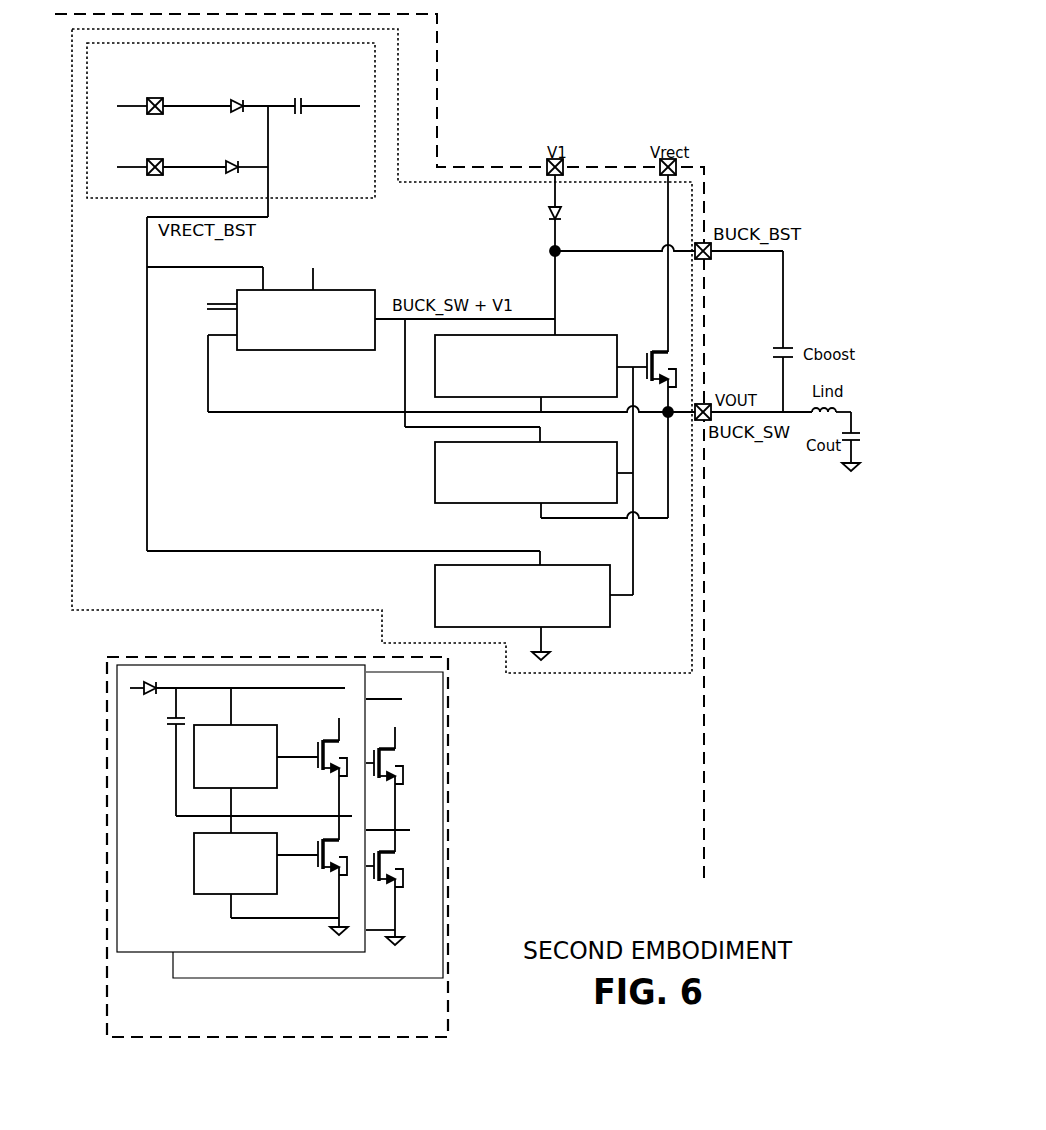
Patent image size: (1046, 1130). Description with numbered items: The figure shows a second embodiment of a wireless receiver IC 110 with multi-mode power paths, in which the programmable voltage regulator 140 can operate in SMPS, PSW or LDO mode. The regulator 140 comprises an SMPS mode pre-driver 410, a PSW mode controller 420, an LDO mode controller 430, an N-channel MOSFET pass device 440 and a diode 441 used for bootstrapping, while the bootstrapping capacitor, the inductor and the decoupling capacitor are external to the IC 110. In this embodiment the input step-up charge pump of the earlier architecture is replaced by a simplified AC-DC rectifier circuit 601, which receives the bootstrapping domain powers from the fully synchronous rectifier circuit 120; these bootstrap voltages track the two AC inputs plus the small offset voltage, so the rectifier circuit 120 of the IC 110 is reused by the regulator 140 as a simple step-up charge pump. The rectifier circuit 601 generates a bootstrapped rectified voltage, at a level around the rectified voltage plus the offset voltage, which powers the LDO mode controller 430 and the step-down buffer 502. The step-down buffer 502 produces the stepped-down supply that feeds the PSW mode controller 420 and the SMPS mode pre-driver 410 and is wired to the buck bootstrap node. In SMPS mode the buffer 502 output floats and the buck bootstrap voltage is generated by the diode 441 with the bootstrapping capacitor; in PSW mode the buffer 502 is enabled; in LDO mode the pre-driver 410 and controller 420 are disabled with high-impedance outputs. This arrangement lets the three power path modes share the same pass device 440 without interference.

The wireless power receiver integrated circuit 110 is at (493, 167).
The fully synchronous rectifier circuit 120 is at (448, 838).
The programmable voltage regulator 140 is at (450, 241).
The SMPS mode pre-driver 410 is at (607, 393).
The PSW mode controller 420 is at (607, 499).
The LDO mode controller 430 is at (606, 620).
The pass device 440 is at (646, 361).
The diode 441 is at (561, 218).
The step-down buffer 502 is at (303, 350).
The simplified AC-DC rectifier circuit 601 is at (375, 131).